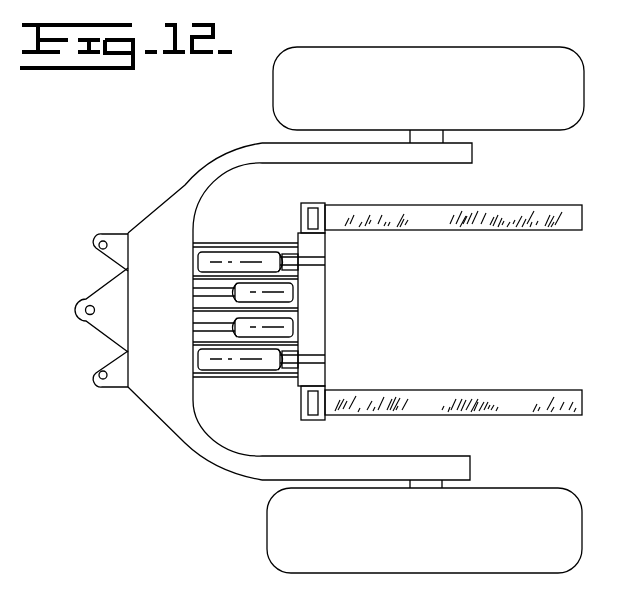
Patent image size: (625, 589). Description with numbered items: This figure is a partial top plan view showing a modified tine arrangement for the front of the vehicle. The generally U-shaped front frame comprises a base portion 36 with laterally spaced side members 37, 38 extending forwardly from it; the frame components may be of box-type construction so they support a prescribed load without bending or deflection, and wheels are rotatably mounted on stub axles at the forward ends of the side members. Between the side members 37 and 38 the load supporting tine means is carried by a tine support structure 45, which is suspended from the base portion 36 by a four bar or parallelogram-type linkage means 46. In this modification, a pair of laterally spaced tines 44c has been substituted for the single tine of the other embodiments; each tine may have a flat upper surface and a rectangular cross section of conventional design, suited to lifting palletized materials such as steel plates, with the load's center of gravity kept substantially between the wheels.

The base portion 36 is at (175, 327).
The side member 37 is at (444, 463).
The side member 38 is at (388, 155).
The laterally spaced tines 44c is at (505, 228).
The tine support structure 45 is at (315, 319).
The parallelogram-type linkage means 46 is at (217, 236).